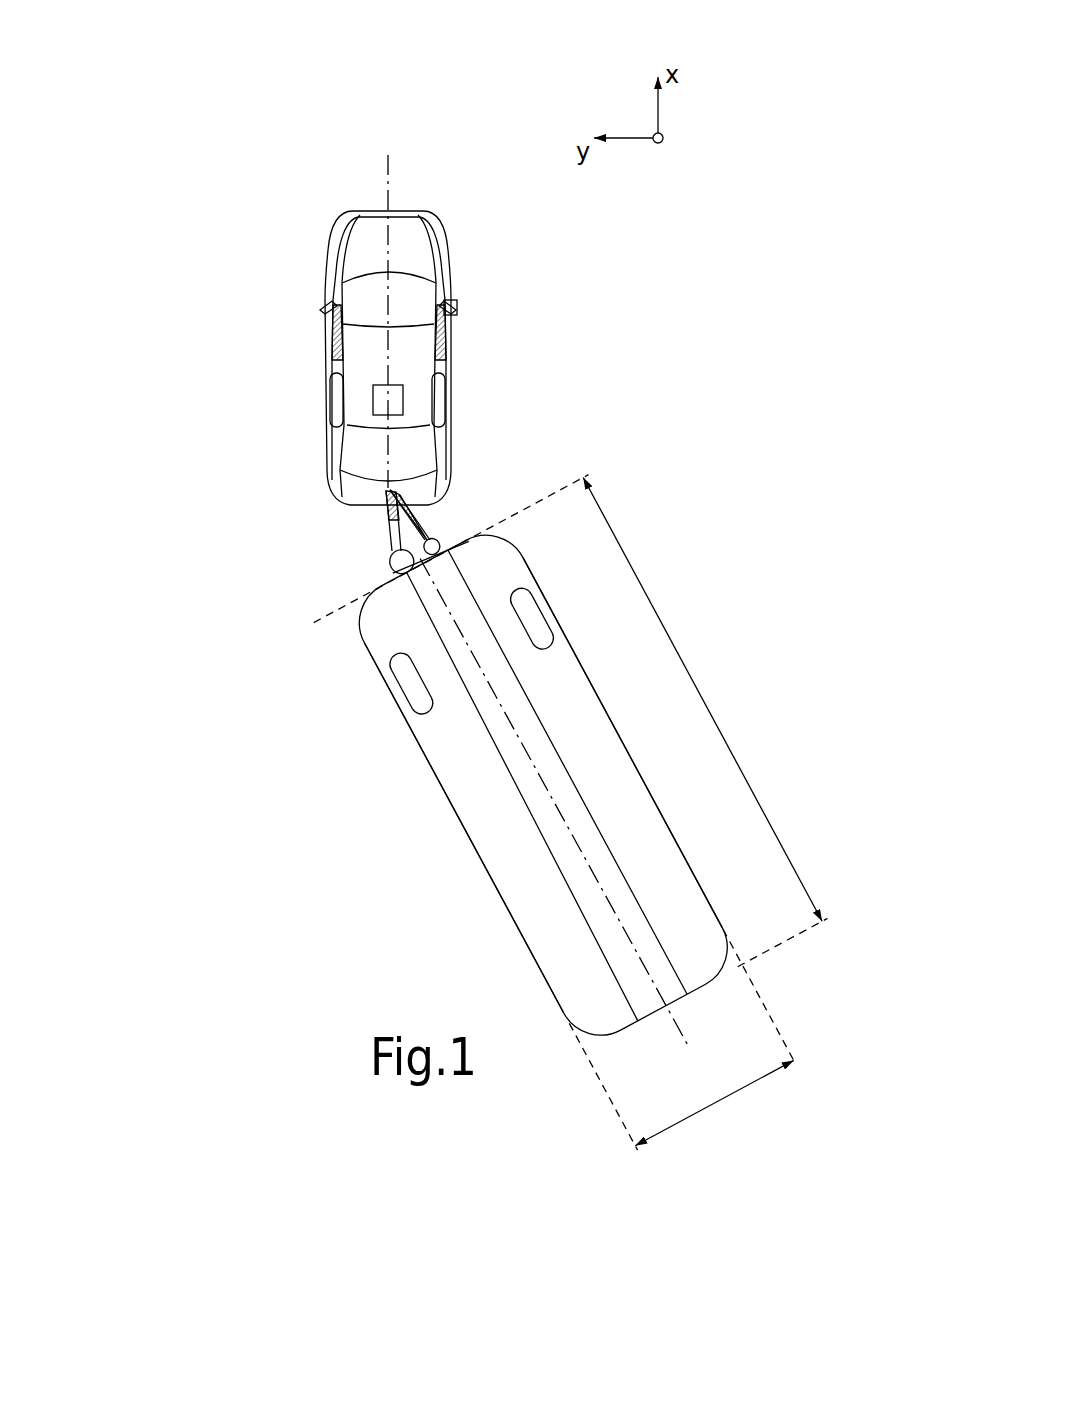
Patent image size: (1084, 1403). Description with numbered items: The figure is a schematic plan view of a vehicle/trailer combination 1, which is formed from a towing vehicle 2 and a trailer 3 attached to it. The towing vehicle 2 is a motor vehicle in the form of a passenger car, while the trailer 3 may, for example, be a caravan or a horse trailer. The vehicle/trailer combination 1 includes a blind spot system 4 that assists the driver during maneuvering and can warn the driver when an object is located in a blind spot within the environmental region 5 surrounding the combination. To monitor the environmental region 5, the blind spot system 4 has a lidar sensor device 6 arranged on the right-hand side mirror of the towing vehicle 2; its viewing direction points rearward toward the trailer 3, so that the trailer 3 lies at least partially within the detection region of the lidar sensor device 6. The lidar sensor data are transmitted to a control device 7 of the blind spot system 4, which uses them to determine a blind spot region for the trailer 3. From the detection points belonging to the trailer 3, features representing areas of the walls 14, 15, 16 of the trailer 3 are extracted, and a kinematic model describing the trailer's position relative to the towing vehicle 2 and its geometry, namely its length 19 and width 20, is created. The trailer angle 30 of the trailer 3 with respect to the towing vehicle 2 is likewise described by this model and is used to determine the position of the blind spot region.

The vehicle/trailer combination 1 is at (240, 245).
The towing vehicle 2 is at (450, 253).
The trailer 3 is at (620, 767).
The blind spot system 4 is at (399, 362).
The environmental region 5 is at (185, 388).
The lidar sensor device 6 is at (459, 306).
The control device 7 is at (396, 400).
The wall 14 is at (610, 710).
The wall 15 is at (452, 540).
The wall 16 is at (465, 826).
The length 19 is at (705, 693).
The width 20 is at (715, 1107).
The trailer angle 30 is at (432, 510).